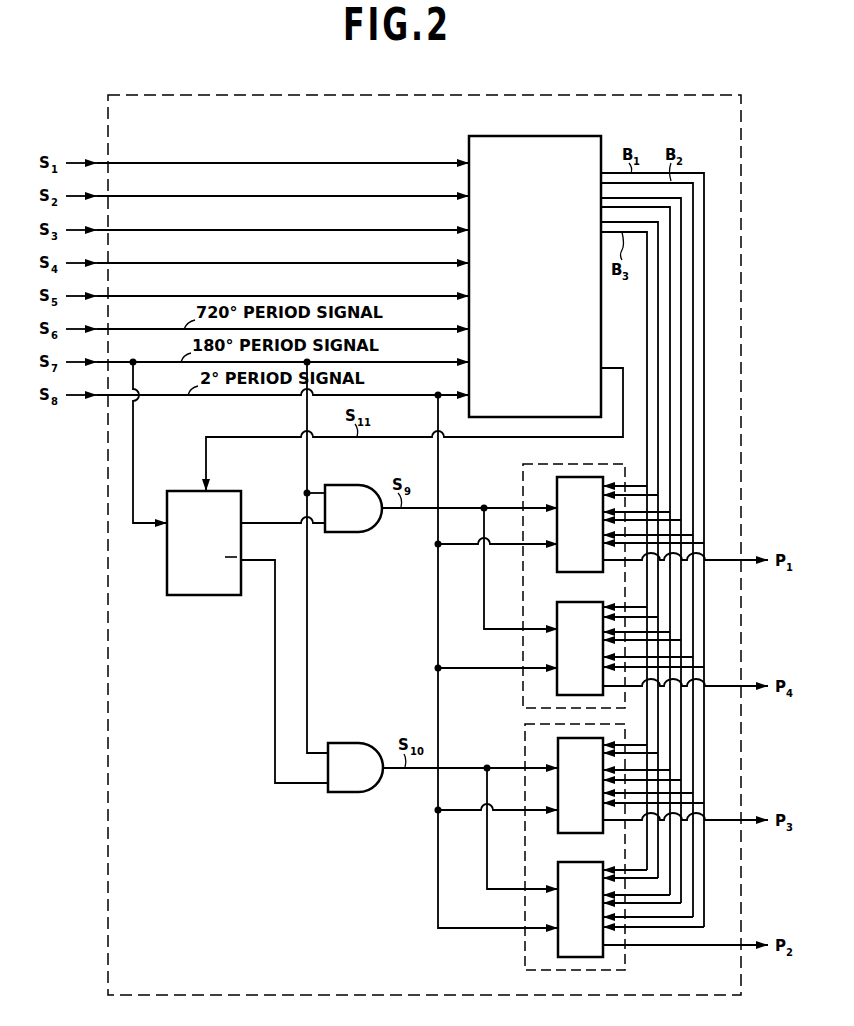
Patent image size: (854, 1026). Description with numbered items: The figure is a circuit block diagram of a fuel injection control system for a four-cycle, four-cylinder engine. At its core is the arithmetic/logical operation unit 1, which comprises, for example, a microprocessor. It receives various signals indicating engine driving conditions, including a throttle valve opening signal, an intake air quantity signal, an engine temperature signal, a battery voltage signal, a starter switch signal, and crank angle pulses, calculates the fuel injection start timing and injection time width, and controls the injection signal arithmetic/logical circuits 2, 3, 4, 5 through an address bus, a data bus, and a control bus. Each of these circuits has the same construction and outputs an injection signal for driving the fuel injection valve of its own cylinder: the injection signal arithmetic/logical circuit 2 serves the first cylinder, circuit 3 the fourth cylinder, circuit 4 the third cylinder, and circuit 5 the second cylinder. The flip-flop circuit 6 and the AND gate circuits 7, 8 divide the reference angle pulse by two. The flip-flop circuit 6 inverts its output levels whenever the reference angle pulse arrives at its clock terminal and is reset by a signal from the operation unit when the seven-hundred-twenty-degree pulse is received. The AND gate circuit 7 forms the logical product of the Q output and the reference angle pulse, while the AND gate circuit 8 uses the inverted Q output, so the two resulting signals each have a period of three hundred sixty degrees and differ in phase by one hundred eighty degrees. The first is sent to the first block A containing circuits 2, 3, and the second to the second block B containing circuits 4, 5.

The arithmetic/logical operation unit 1 is at (603, 142).
The injection signal arithmetic/logical circuit 2 is at (580, 524).
The injection signal arithmetic/logical circuit 3 is at (580, 648).
The injection signal arithmetic/logical circuit 4 is at (580, 785).
The injection signal arithmetic/logical circuit 5 is at (580, 909).
The flip-flop circuit 6 is at (231, 596).
The AND gate circuit 7 is at (362, 533).
The AND gate circuit 8 is at (365, 743).
The first block A is at (522, 703).
The second block B is at (524, 910).